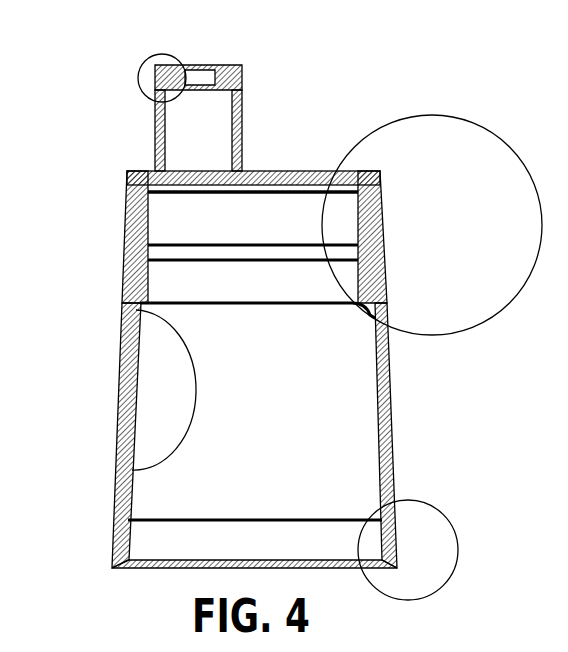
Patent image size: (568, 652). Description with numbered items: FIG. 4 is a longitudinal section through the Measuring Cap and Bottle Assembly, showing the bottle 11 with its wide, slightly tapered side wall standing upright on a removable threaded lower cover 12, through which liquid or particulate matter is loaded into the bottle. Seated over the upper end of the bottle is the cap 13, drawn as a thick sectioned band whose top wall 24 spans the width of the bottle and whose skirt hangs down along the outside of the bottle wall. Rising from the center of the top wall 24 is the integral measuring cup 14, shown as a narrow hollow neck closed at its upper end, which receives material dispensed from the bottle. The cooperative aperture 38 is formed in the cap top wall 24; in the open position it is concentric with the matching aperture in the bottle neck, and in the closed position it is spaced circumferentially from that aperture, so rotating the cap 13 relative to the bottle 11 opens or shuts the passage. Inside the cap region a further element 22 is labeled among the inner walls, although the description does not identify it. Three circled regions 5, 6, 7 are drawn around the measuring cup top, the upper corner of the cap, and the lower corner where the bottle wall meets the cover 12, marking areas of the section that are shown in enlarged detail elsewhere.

The detail region of lid and container wall 5 is at (432, 205).
The detail region of neck cap 6 is at (150, 62).
The detail region of container bottom 7 is at (435, 546).
The bottle 11 is at (116, 398).
The removable threaded lower cover 12 is at (148, 568).
The cap 13 is at (129, 225).
The integral measuring cup 14 is at (157, 123).
The inner liner 22 is at (148, 213).
The top wall 24 is at (295, 171).
The aperture 38 is at (241, 171).